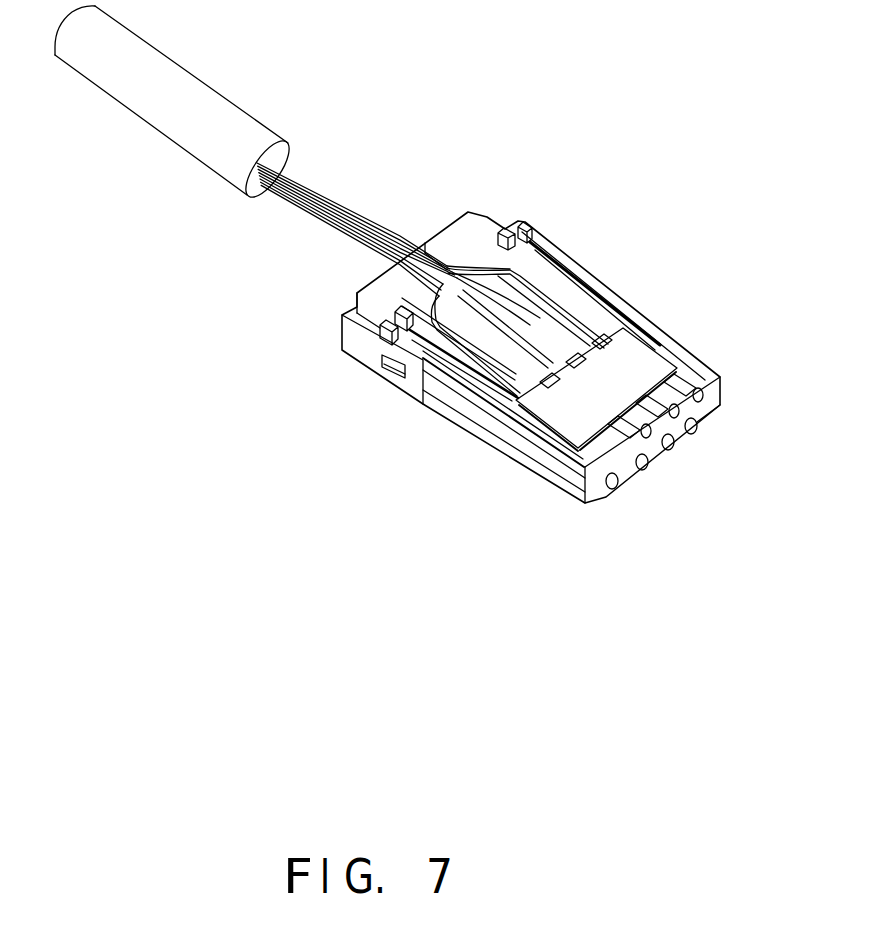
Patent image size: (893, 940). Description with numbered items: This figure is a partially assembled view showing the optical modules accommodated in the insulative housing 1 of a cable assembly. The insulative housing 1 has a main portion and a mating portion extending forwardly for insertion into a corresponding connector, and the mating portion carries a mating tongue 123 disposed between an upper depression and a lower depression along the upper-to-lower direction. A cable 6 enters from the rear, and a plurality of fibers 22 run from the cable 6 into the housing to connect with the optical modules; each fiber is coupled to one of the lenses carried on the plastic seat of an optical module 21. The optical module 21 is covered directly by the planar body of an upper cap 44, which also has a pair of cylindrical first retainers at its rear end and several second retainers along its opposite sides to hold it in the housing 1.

The cable 6 is at (185, 102).
The fibers 22 is at (380, 232).
The insulative housing 1 is at (468, 407).
The upper cap 44 is at (601, 380).
The optical module 21 is at (660, 417).
The mating tongue 123 is at (650, 445).